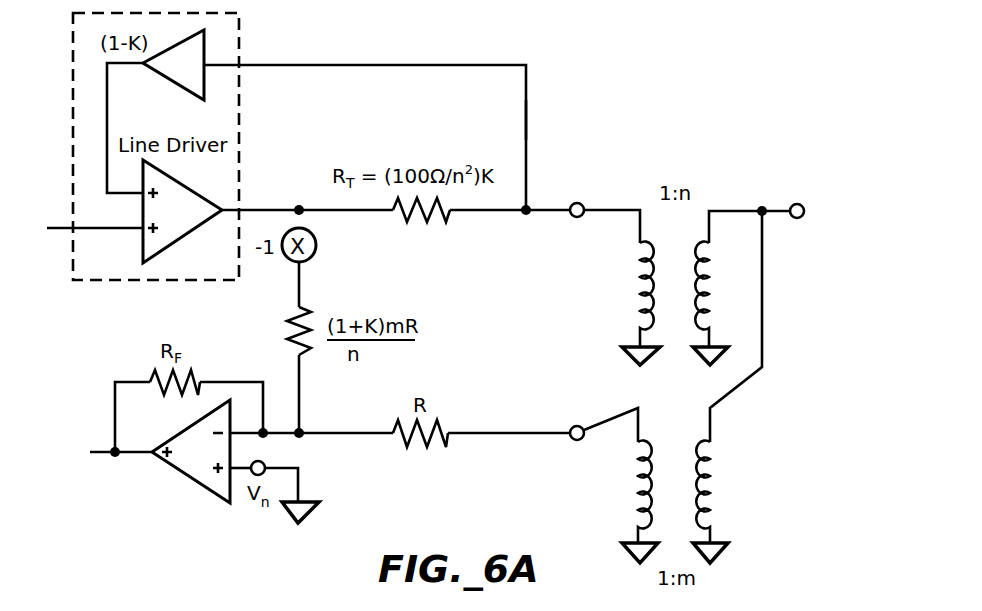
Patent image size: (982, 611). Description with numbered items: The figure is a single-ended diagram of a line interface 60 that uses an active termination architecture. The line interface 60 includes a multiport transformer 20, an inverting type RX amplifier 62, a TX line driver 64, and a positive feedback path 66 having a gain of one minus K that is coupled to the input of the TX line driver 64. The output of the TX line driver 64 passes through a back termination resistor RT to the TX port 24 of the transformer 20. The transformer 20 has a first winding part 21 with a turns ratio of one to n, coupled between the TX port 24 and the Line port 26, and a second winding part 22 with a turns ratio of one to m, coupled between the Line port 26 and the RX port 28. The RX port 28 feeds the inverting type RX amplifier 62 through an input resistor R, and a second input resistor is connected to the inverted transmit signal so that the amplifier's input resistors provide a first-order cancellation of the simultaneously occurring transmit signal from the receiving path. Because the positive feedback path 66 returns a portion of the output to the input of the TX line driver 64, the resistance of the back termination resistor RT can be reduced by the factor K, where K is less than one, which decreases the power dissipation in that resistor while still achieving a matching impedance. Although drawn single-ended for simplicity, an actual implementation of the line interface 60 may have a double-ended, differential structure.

The line interface 60 is at (518, 38).
The TX line driver 64 is at (255, 120).
The positive feedback path 66 is at (527, 115).
The TX port 24 is at (577, 203).
The transformer 20 is at (721, 333).
The first winding part 21 is at (730, 289).
The second winding part 22 is at (730, 487).
The Line port 26 is at (802, 216).
The RX port 28 is at (573, 440).
The inverting type RX amplifier 62 is at (185, 495).